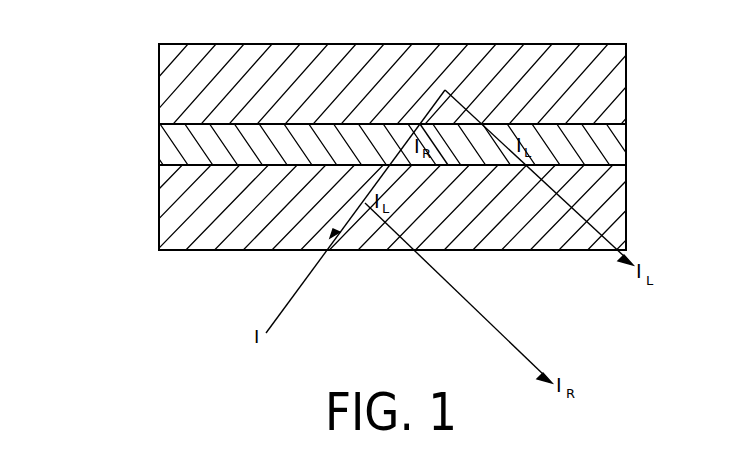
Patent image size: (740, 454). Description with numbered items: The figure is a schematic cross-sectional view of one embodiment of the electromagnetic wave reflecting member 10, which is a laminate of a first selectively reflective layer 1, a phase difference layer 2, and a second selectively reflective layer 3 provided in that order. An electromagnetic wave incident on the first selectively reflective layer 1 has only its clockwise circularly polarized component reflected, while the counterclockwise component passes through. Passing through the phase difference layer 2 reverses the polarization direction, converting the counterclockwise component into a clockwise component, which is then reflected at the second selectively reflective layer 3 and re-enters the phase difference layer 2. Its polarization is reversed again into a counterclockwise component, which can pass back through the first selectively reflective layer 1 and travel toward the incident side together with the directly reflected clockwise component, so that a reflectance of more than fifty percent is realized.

The optical laminate / display device 10 is at (147, 33).
The first selectively reflective layer 1 is at (168, 208).
The phase difference layer 2 is at (170, 145).
The second selectively reflective layer 3 is at (168, 89).